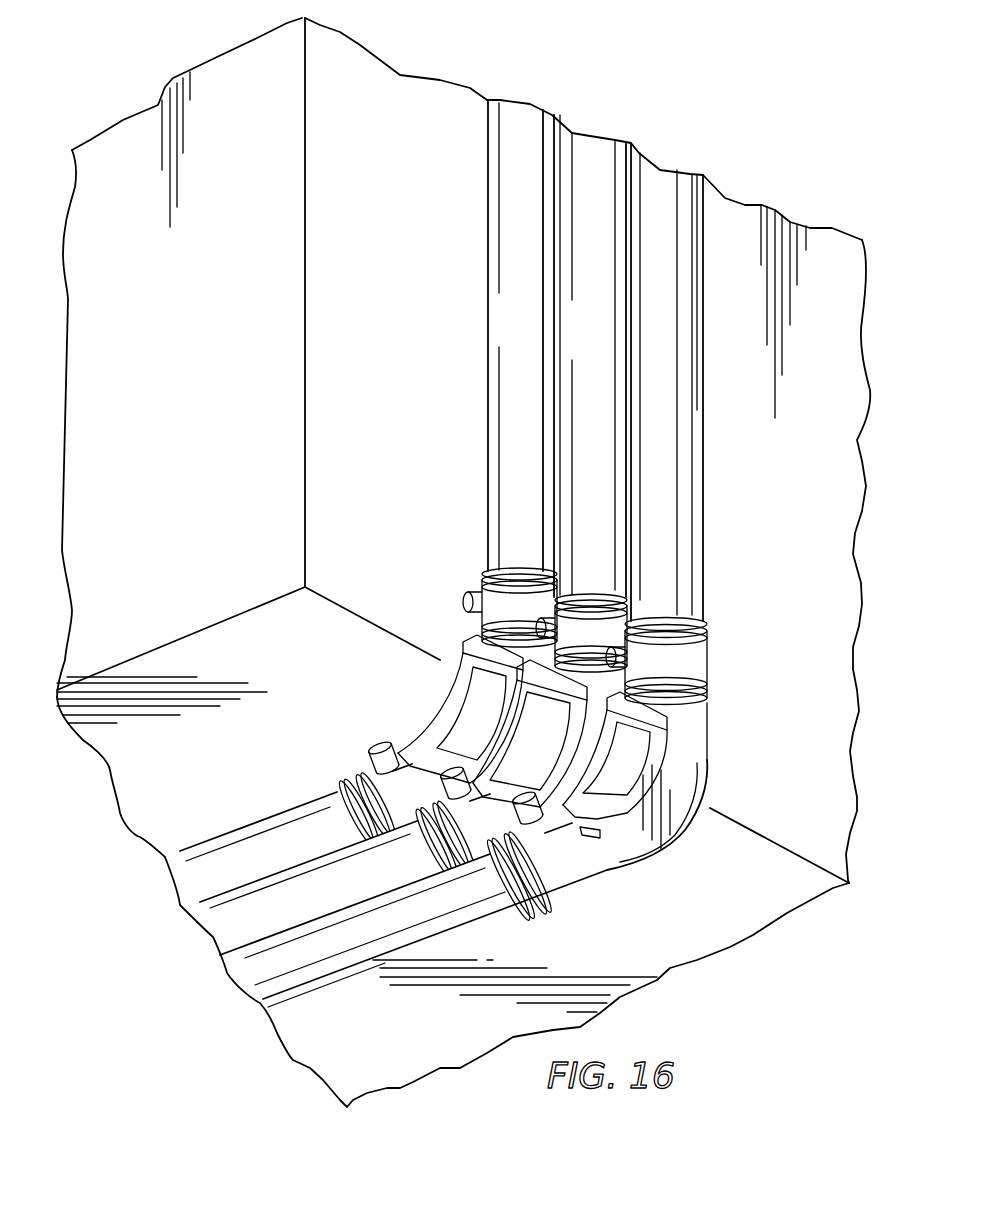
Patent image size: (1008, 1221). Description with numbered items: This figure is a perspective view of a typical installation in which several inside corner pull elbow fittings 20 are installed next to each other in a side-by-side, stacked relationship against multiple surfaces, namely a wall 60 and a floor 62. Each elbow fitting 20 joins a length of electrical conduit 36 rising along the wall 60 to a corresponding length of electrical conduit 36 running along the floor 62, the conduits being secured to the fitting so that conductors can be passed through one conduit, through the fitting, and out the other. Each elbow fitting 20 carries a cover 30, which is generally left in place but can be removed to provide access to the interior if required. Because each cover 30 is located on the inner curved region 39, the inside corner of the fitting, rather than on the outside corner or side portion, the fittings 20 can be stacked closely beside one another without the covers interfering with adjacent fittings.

The inside corner pull elbow fitting 20 is at (430, 730).
The cover 30 is at (463, 643).
The electrical conduit 36 is at (650, 475).
The inner curved region 39 is at (479, 706).
The wall 60 is at (423, 160).
The floor 62 is at (710, 907).